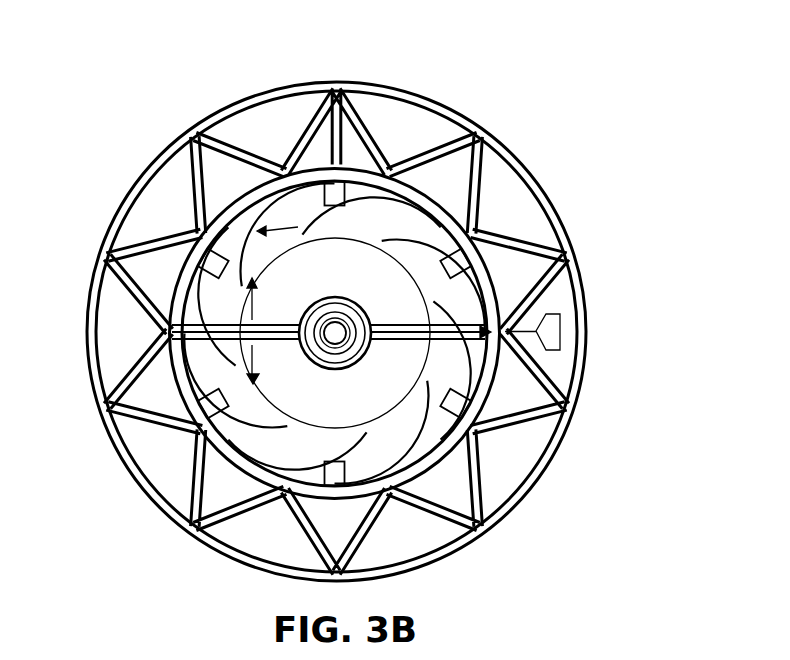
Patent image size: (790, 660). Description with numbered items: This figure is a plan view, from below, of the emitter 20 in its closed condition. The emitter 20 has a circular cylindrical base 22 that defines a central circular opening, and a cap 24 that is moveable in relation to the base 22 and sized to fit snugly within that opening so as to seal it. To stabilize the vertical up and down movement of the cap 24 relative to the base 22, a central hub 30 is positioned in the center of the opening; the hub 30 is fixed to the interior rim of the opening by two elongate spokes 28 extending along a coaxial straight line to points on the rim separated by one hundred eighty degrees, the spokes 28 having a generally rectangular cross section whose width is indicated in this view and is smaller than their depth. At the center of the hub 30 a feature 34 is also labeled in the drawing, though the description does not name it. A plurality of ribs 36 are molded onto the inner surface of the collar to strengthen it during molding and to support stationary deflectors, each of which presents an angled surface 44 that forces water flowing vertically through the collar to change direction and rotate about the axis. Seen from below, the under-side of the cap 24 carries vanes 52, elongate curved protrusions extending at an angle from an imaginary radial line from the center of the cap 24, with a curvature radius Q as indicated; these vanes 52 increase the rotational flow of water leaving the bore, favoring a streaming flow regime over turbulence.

The emitter 20 is at (617, 172).
The base 22 is at (417, 92).
The vanes 52 is at (281, 174).
The cap 24 is at (195, 493).
The ribs 36 is at (327, 484).
The spokes 28 is at (273, 308).
The central hub 30 is at (364, 366).
The hub bore 34 is at (287, 370).
The angled surface 44 is at (538, 332).